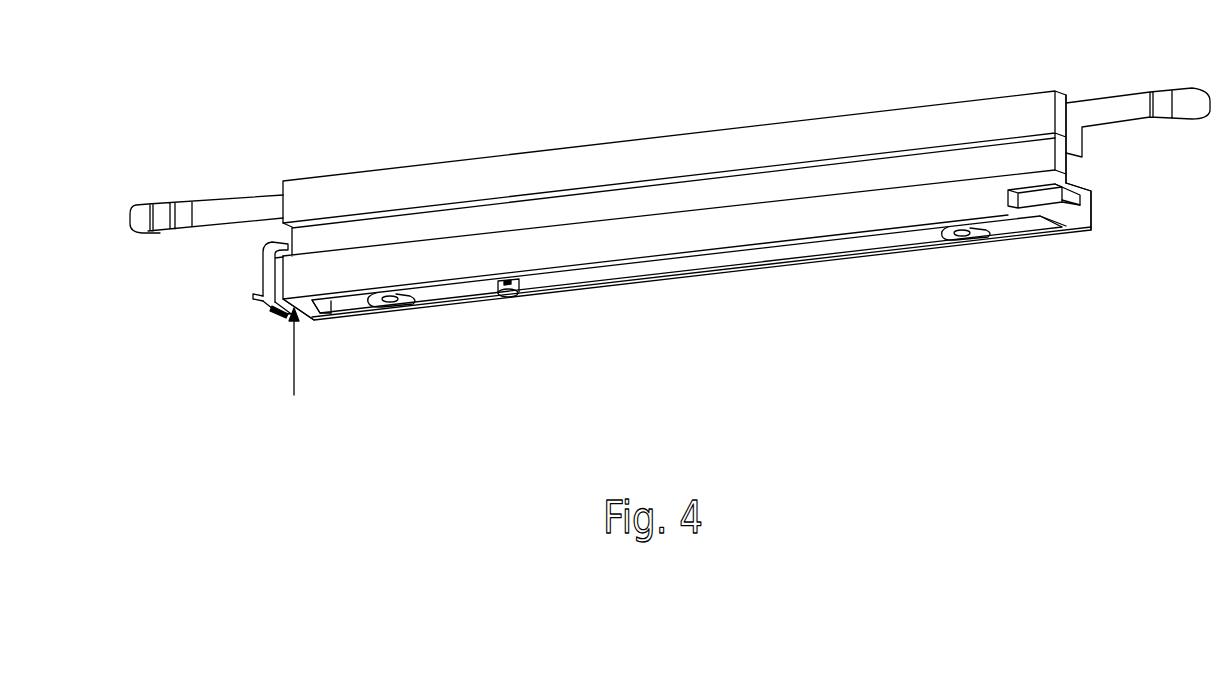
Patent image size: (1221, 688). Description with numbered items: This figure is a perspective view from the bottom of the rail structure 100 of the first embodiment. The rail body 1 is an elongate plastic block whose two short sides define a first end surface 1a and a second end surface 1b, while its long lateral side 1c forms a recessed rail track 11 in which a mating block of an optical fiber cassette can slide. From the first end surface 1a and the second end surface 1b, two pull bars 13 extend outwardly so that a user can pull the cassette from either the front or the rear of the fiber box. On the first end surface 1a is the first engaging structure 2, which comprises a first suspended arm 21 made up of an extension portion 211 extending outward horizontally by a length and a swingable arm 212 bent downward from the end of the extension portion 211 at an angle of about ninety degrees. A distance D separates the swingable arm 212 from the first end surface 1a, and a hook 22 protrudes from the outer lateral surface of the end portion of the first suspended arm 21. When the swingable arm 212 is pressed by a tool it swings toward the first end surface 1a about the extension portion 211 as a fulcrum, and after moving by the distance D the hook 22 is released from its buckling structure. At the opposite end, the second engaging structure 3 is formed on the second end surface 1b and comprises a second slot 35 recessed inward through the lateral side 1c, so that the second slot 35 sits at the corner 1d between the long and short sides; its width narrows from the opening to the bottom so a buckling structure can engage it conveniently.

The rail structure 100 is at (660, 231).
The rail body 1 is at (741, 228).
The first end surface 1a is at (306, 314).
The second end surface 1b is at (1088, 194).
The lateral side 1c is at (753, 150).
The corner 1d is at (1057, 207).
The recessed rail track 11 is at (612, 203).
The pull bar 13 is at (210, 210).
The first engaging structure 2 is at (201, 346).
The first suspended arm 21 is at (201, 293).
The extension portion 211 is at (262, 243).
The swingable arm 212 is at (255, 287).
The hook 22 is at (258, 304).
The second engaging structure 3 is at (1033, 205).
The second slot 35 is at (1055, 203).
The distance D is at (295, 366).